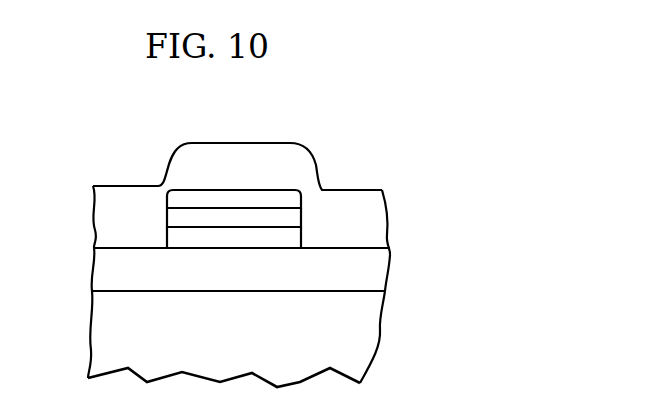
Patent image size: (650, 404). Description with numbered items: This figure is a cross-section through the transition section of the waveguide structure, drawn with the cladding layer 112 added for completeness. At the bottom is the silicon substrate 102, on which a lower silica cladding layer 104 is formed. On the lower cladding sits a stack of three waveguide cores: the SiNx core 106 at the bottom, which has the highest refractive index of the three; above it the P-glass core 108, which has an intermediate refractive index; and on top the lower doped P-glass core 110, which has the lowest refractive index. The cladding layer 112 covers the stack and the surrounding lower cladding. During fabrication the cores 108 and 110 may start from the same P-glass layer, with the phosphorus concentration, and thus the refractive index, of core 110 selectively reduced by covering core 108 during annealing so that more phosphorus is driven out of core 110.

The silicon substrate 102 is at (362, 328).
The lower silica cladding layer 104 is at (368, 268).
The SiNx core 106 is at (307, 245).
The P-glass core 108 is at (295, 219).
The lower doped P-glass core 110 is at (288, 197).
The cladding layer 112 is at (180, 143).